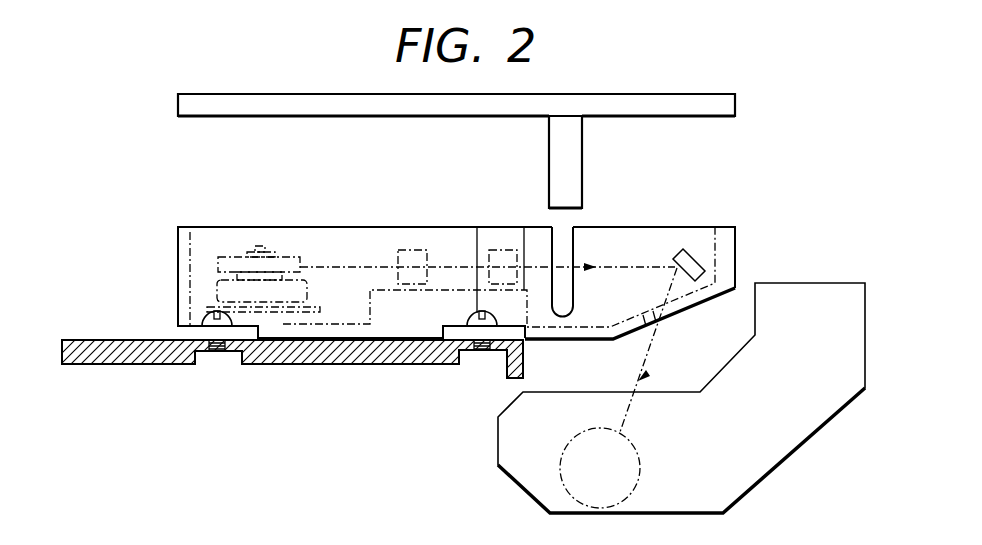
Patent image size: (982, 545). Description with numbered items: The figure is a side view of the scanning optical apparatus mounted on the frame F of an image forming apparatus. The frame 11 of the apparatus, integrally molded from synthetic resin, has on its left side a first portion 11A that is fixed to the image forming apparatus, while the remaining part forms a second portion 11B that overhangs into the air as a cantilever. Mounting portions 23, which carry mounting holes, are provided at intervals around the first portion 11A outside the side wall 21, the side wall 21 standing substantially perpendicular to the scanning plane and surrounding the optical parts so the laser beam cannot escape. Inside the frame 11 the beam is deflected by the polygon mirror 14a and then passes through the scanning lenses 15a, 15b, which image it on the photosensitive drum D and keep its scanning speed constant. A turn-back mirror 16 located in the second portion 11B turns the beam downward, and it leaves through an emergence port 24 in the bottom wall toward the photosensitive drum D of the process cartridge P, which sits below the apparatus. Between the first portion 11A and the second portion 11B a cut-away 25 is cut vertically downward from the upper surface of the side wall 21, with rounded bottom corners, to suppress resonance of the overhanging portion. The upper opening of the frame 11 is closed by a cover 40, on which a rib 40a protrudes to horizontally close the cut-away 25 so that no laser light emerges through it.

The cover 40 is at (489, 148).
The rib 40a is at (565, 178).
The frame 11 is at (417, 251).
The first portion 11A is at (308, 226).
The second portion 11B is at (635, 226).
The side wall 21 is at (176, 292).
The polygon mirror 14a is at (235, 248).
The scanning lens 15a is at (412, 250).
The scanning lens 15b is at (503, 250).
The cut-away 25 is at (567, 240).
The turn-back mirror 16 is at (693, 248).
The emergence port 24 is at (647, 337).
The mounting portion 23 is at (213, 345).
The frame F is at (132, 364).
The process cartridge P is at (800, 450).
The photosensitive drum D is at (632, 468).